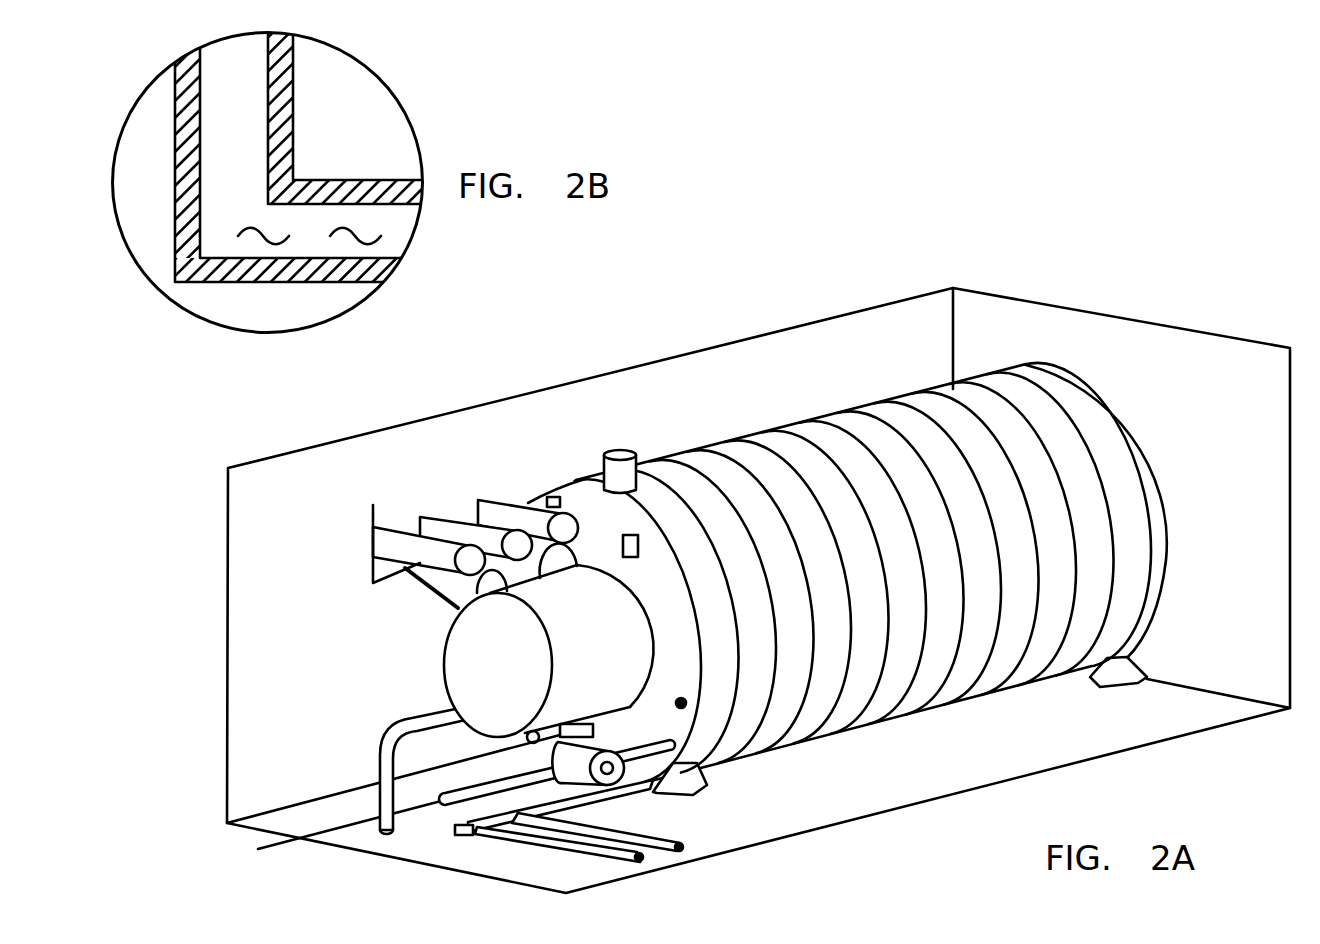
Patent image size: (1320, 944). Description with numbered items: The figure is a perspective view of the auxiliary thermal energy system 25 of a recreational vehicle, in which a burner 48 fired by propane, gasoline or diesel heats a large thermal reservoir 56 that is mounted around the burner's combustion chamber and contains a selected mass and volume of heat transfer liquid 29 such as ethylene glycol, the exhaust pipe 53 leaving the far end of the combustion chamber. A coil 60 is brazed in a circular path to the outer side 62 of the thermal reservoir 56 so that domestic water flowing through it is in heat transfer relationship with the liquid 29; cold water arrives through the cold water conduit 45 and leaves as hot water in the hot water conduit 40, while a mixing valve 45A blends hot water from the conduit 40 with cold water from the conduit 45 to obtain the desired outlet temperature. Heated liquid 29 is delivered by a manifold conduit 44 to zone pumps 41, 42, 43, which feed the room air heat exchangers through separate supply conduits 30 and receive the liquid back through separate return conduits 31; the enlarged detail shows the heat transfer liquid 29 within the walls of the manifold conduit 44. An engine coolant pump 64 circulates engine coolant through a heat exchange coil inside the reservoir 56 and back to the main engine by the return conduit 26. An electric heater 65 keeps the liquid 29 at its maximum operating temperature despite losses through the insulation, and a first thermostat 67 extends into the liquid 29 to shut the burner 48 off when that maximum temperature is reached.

In FIG. 2A, the auxiliary thermal energy system 25 is at (330, 848).
In FIG. 2A, the return conduit 26 is at (393, 800).
In FIG. 2B, the heat transfer liquid 29 is at (268, 226).
In FIG. 2A, the supply conduits 30 is at (373, 527).
In FIG. 2A, the return conduits 31 is at (388, 523).
In FIG. 2A, the hot water conduit 40 is at (445, 800).
In FIG. 2A, the zone pump 41 is at (373, 540).
In FIG. 2A, the zone pump 42 is at (523, 548).
In FIG. 2A, the zone pump 43 is at (573, 536).
In FIG. 2B, the manifold conduit 44 is at (175, 237).
In FIG. 2A, the cold water conduit 45 is at (682, 845).
In FIG. 2A, the mixing valve 45A is at (465, 837).
In FIG. 2A, the burner 48 is at (487, 662).
In FIG. 2A, the exhaust pipe 53 is at (383, 767).
In FIG. 2A, the thermal reservoir 56 is at (583, 480).
In FIG. 2A, the coil 60 is at (912, 428).
In FIG. 2A, the outer side 62 is at (1108, 463).
In FIG. 2A, the engine coolant pump 64 is at (597, 745).
In FIG. 2A, the electric heater 65 is at (686, 706).
In FIG. 2A, the first thermostat 67 is at (631, 536).